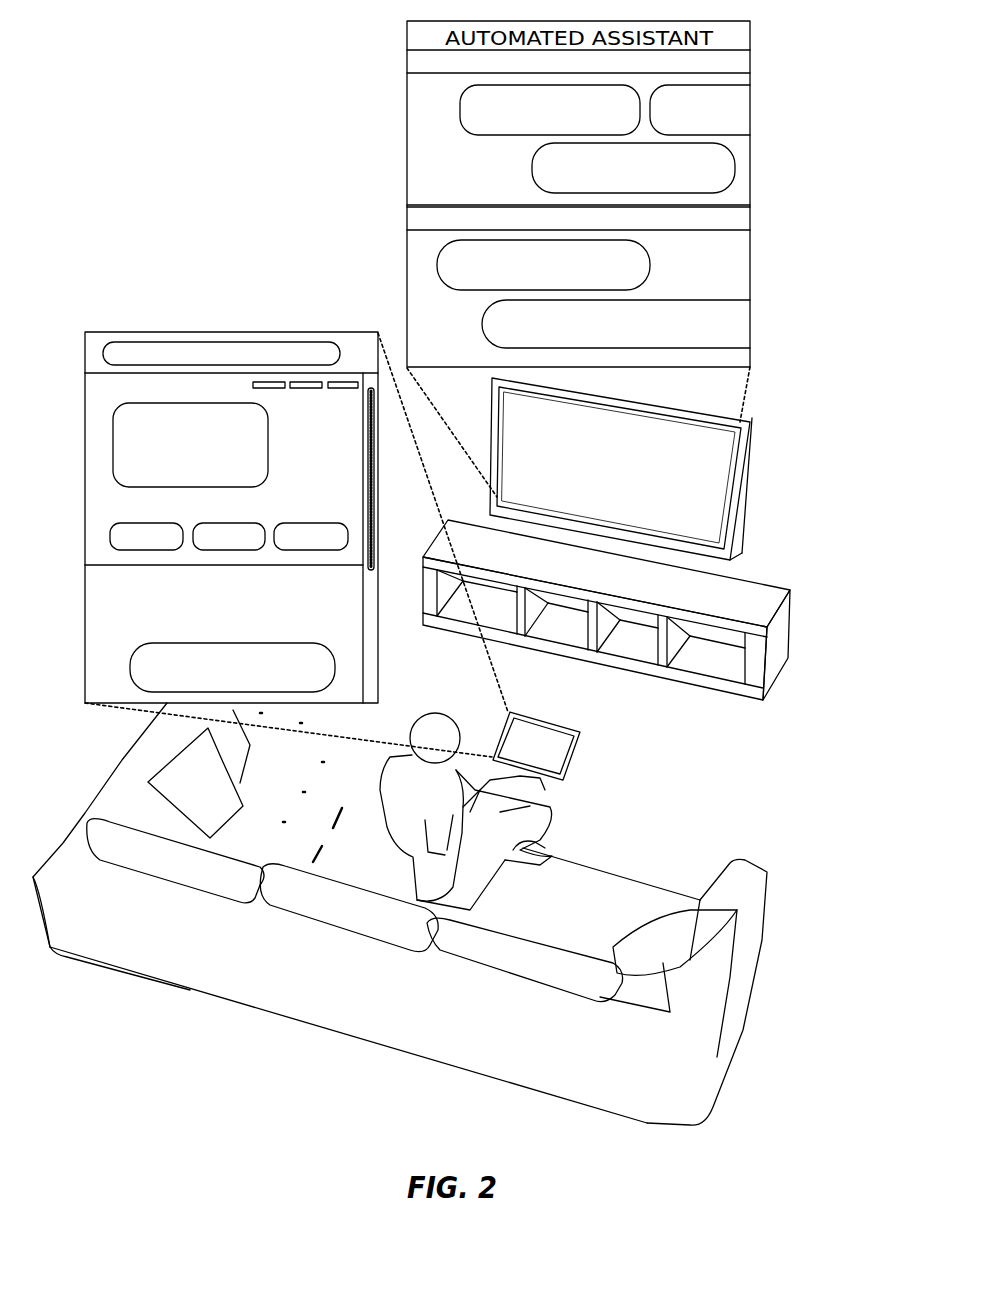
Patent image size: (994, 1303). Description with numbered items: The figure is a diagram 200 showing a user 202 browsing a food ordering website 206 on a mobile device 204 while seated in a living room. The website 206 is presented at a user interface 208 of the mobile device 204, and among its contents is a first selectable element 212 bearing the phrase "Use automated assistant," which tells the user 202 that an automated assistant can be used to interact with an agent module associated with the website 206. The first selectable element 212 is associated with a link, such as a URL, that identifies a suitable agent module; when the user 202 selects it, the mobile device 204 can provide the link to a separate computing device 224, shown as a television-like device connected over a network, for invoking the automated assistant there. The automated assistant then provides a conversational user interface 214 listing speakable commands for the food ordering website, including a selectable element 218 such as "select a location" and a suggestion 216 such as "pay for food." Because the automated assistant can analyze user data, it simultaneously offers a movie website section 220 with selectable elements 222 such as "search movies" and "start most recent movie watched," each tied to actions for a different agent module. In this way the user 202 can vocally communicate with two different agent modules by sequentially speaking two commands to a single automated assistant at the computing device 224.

The diagram 200 is at (150, 100).
The user 202 is at (437, 808).
The mobile device 204 is at (577, 752).
The website 206 is at (336, 455).
The user interface 208 is at (232, 332).
The first selectable element 212 is at (335, 665).
The conversational user interface 214 is at (621, 130).
The pay for food suggestion 216 is at (768, 109).
The selectable element 218 is at (735, 160).
The movie website suggestions 220 is at (623, 268).
The selectable elements 222 is at (650, 262).
The computing device 224 is at (633, 479).